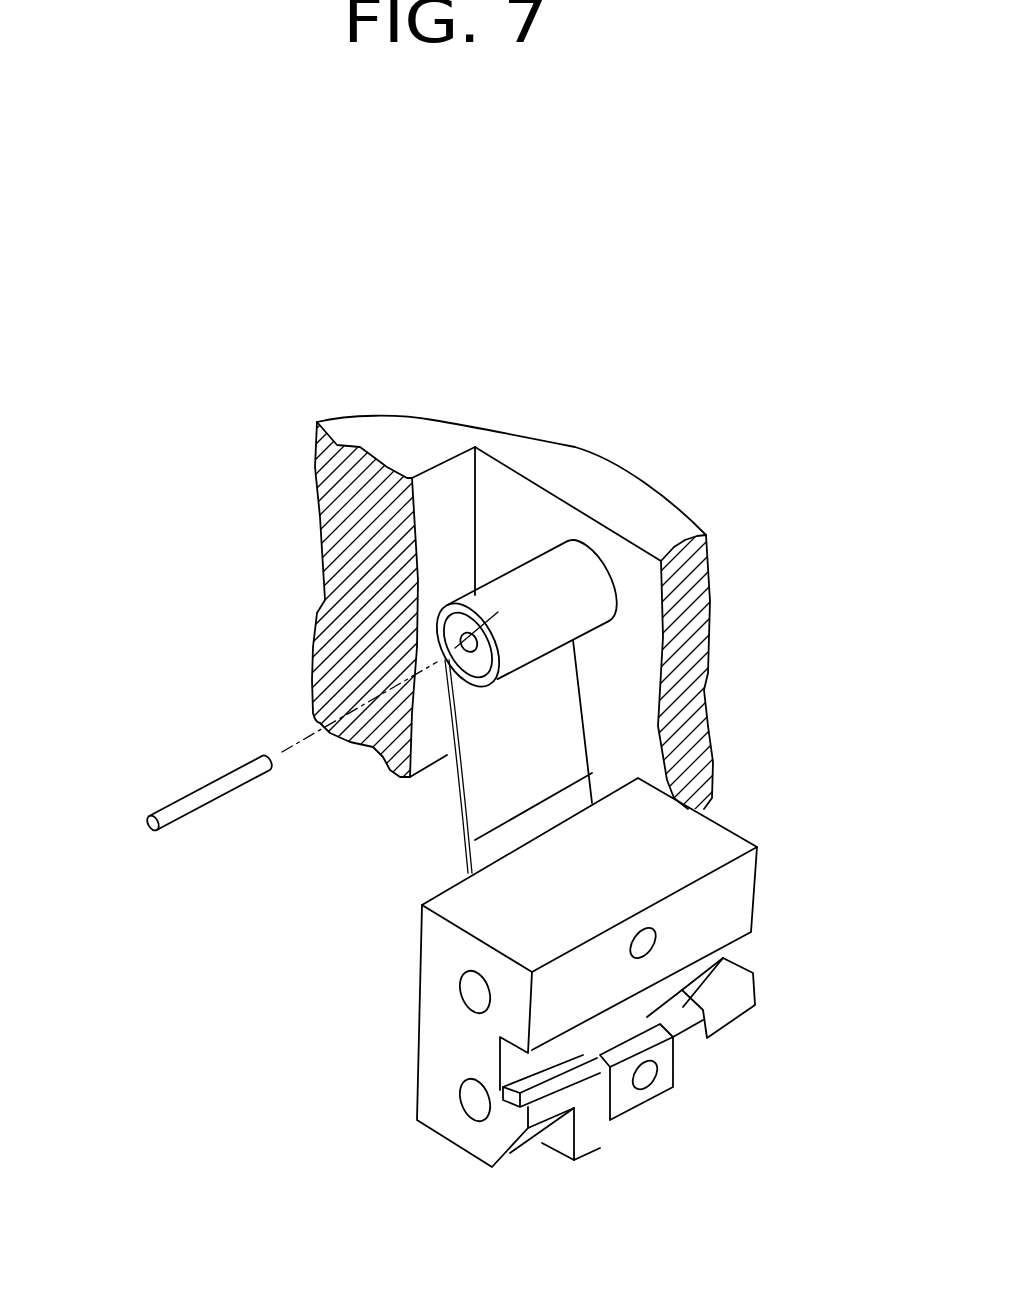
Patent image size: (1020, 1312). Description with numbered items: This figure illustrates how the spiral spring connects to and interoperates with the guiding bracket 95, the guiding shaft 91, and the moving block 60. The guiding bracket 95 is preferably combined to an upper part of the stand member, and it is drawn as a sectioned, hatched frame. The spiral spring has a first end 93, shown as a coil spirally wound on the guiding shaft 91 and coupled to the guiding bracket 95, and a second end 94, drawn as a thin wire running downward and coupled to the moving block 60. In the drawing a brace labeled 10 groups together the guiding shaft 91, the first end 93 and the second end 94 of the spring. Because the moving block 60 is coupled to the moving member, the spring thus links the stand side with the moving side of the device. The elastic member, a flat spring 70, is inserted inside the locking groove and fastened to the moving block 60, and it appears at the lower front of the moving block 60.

The hinge assembly 10 is at (102, 645).
The moving block 60 is at (731, 831).
The flat spring 70 is at (648, 1093).
The guiding shaft 91 is at (193, 790).
The first end 93 is at (458, 646).
The second end 94 is at (462, 858).
The guiding bracket 95 is at (581, 445).